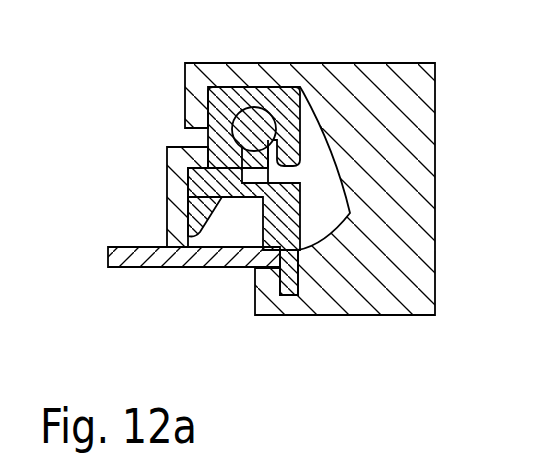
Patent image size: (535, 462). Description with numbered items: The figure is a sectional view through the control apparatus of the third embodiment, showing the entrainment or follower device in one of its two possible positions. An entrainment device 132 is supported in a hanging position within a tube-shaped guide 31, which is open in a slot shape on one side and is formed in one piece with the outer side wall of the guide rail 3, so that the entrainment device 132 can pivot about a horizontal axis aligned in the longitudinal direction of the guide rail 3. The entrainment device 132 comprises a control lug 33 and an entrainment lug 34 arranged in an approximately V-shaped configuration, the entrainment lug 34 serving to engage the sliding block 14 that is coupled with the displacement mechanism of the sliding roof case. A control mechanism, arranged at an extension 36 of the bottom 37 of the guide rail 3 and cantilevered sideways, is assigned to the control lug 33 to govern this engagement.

The guide rail 3 is at (130, 262).
The sliding block 14 is at (421, 138).
The tube-shaped guide 31 is at (228, 102).
The control lug 33 is at (200, 233).
The entrainment lug 34 is at (265, 213).
The extension 36 is at (252, 258).
The bottom 37 is at (150, 268).
The entrainment device 132 is at (278, 150).